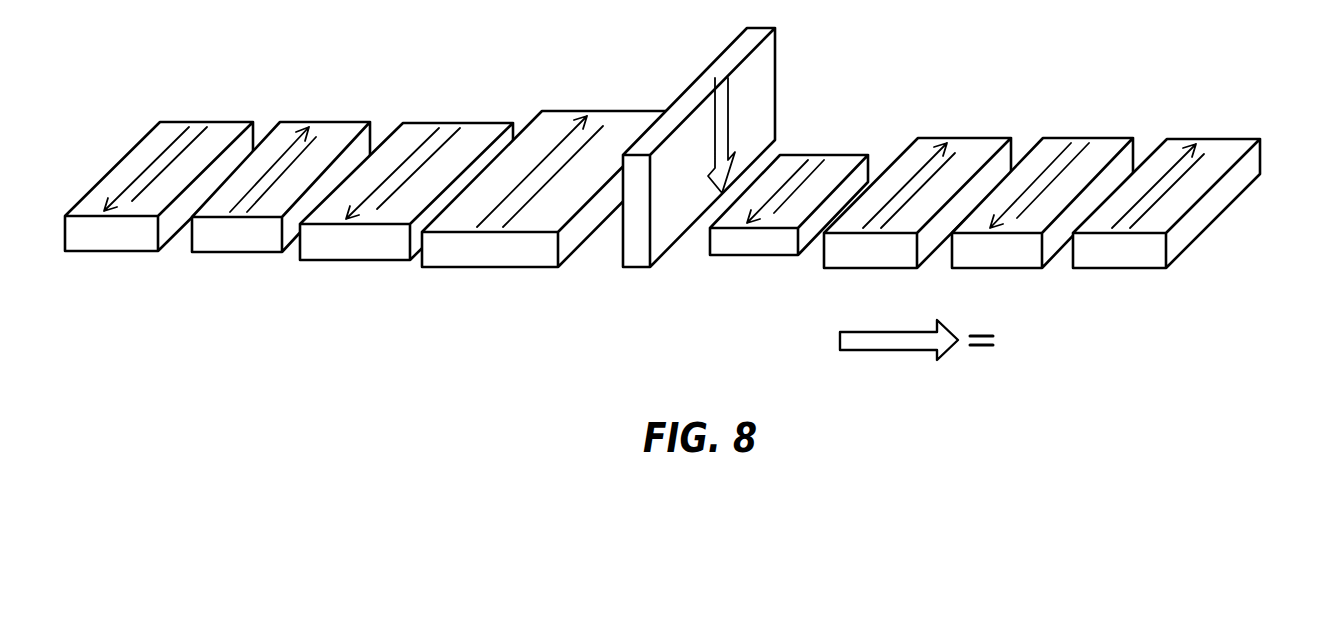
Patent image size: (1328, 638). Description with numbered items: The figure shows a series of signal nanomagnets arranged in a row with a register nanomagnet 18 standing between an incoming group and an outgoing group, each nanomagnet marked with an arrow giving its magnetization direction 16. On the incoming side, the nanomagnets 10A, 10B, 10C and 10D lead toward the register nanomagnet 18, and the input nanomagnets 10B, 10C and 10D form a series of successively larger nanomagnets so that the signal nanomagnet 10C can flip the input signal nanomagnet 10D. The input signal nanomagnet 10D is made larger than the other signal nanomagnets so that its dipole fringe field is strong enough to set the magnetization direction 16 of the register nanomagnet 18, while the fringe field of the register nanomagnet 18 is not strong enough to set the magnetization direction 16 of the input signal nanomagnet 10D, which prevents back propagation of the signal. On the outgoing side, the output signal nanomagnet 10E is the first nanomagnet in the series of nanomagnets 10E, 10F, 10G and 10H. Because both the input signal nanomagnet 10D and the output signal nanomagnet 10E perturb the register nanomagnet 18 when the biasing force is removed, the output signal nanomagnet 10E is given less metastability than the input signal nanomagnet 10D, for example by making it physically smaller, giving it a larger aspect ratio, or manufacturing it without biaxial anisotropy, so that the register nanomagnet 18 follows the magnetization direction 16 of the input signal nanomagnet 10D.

The signal nanomagnet 10A is at (177, 120).
The input nanomagnet 10B is at (298, 120).
The signal nanomagnet 10C is at (435, 122).
The input signal nanomagnet 10D is at (558, 110).
The output signal nanomagnet 10E is at (845, 153).
The signal nanomagnet 10F is at (977, 138).
The signal nanomagnet 10G is at (1100, 137).
The signal nanomagnet 10H is at (1232, 137).
The register nanomagnet 18 is at (778, 70).
The magnetization direction 16 is at (1048, 343).